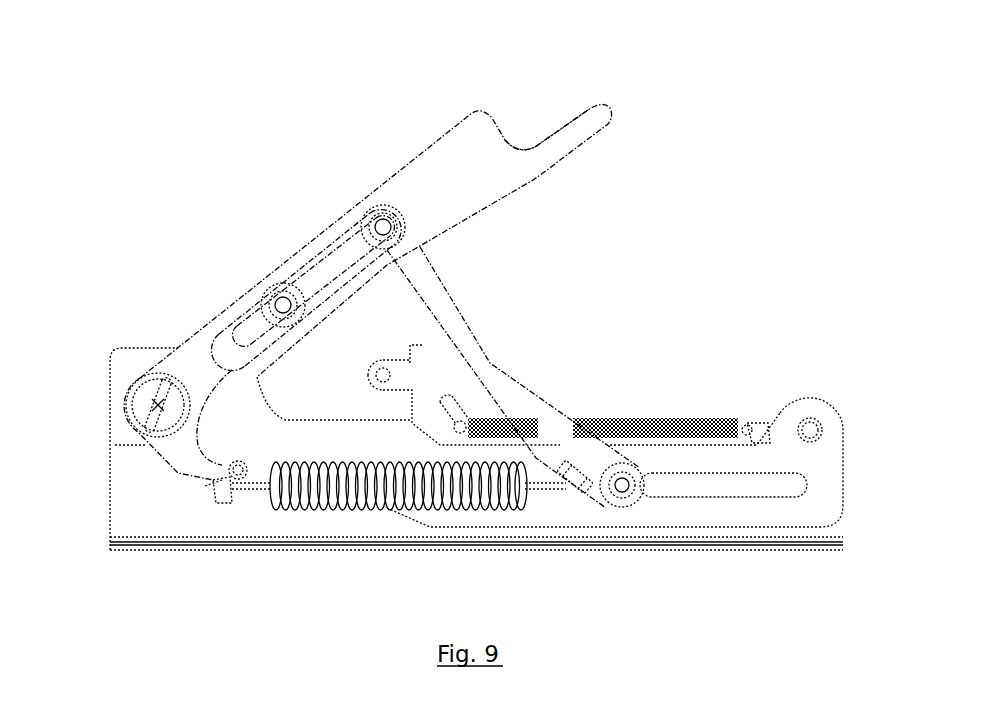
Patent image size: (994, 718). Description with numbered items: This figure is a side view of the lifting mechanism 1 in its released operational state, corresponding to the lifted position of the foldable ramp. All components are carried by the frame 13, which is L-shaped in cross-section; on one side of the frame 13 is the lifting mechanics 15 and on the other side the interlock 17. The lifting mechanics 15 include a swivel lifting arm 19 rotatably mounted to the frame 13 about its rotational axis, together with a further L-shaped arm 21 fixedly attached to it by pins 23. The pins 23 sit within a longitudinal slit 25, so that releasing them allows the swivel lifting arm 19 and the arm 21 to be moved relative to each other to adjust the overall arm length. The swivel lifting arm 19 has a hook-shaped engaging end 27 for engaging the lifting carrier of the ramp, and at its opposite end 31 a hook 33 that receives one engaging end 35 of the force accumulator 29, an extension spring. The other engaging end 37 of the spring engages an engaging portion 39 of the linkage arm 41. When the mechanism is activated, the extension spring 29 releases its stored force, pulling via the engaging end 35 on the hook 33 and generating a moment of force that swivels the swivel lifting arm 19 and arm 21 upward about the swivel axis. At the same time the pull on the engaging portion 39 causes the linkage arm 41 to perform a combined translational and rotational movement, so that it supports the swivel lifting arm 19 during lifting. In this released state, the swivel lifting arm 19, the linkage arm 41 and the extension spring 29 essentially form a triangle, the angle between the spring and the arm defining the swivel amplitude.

The lifting mechanism 1 is at (698, 198).
The frame 13 is at (850, 524).
The lifting mechanics 15 is at (350, 568).
The interlock 17 is at (614, 400).
The swivel lifting arm 19 is at (440, 170).
The arm 21 is at (193, 336).
The pin 23 is at (385, 243).
The longitudinal slit 25 is at (330, 268).
The engaging end 27 is at (558, 128).
The force accumulator 29 is at (453, 522).
The end 31 is at (224, 506).
The hook 33 is at (240, 461).
The engaging end 35 is at (222, 481).
The engaging end 37 is at (540, 492).
The engaging portion 39 is at (580, 492).
The linkage arm 41 is at (542, 433).